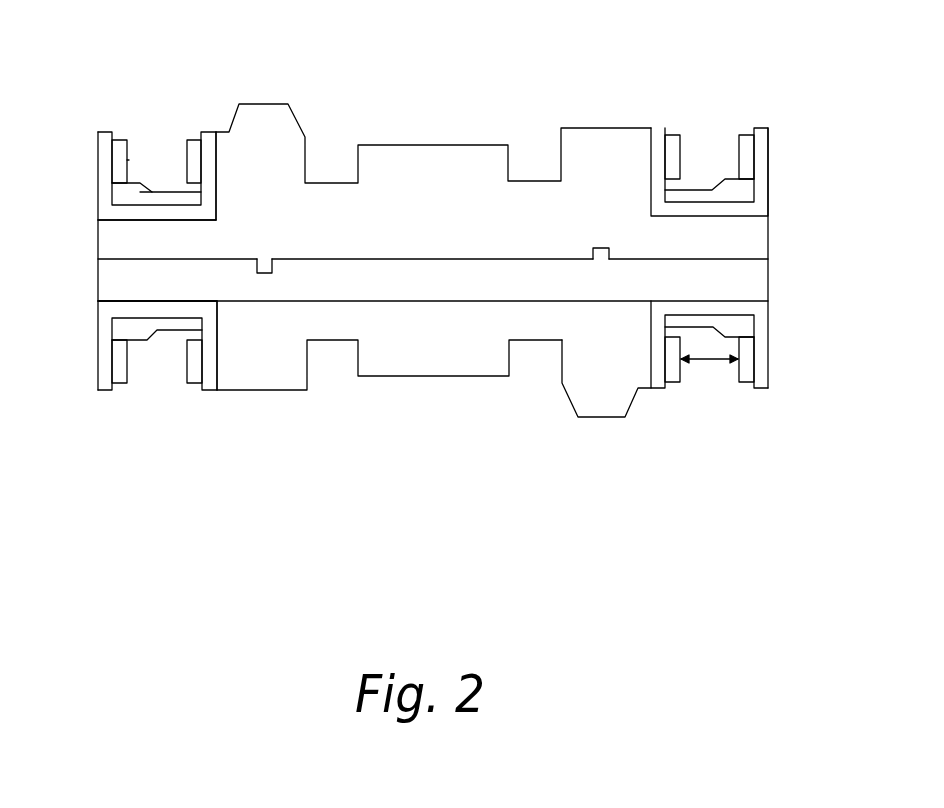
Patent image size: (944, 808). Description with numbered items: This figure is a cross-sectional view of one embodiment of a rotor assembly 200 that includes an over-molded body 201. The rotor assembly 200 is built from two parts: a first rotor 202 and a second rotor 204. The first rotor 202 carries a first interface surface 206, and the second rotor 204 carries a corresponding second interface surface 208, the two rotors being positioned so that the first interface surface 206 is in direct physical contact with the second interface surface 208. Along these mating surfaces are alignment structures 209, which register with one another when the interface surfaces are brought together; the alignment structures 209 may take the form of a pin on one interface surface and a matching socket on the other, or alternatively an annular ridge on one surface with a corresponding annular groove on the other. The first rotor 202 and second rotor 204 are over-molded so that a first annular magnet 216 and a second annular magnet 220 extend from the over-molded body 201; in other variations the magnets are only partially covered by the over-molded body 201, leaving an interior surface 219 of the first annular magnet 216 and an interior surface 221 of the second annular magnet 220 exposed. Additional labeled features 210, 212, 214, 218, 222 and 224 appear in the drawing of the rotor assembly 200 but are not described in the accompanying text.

The rotor assembly 200 is at (810, 62).
The over-molded body 201 is at (602, 418).
The first rotor 202 is at (800, 277).
The second rotor 204 is at (807, 208).
The first interface surface 206 is at (723, 260).
The second interface surface 208 is at (723, 259).
The alignment structures 209 is at (272, 274).
The yoke 210 is at (98, 167).
The yoke base 212 is at (105, 198).
The yoke pole 214 is at (208, 143).
The first annular magnet 216 is at (115, 140).
The north pole 218 is at (113, 138).
The interior surface of the first annular magnet 219 is at (128, 158).
The second annular magnet 220 is at (188, 140).
The interior surface of the second annular magnet 221 is at (187, 172).
The pole piece 222 is at (190, 185).
The magnet spacing 224 is at (712, 365).